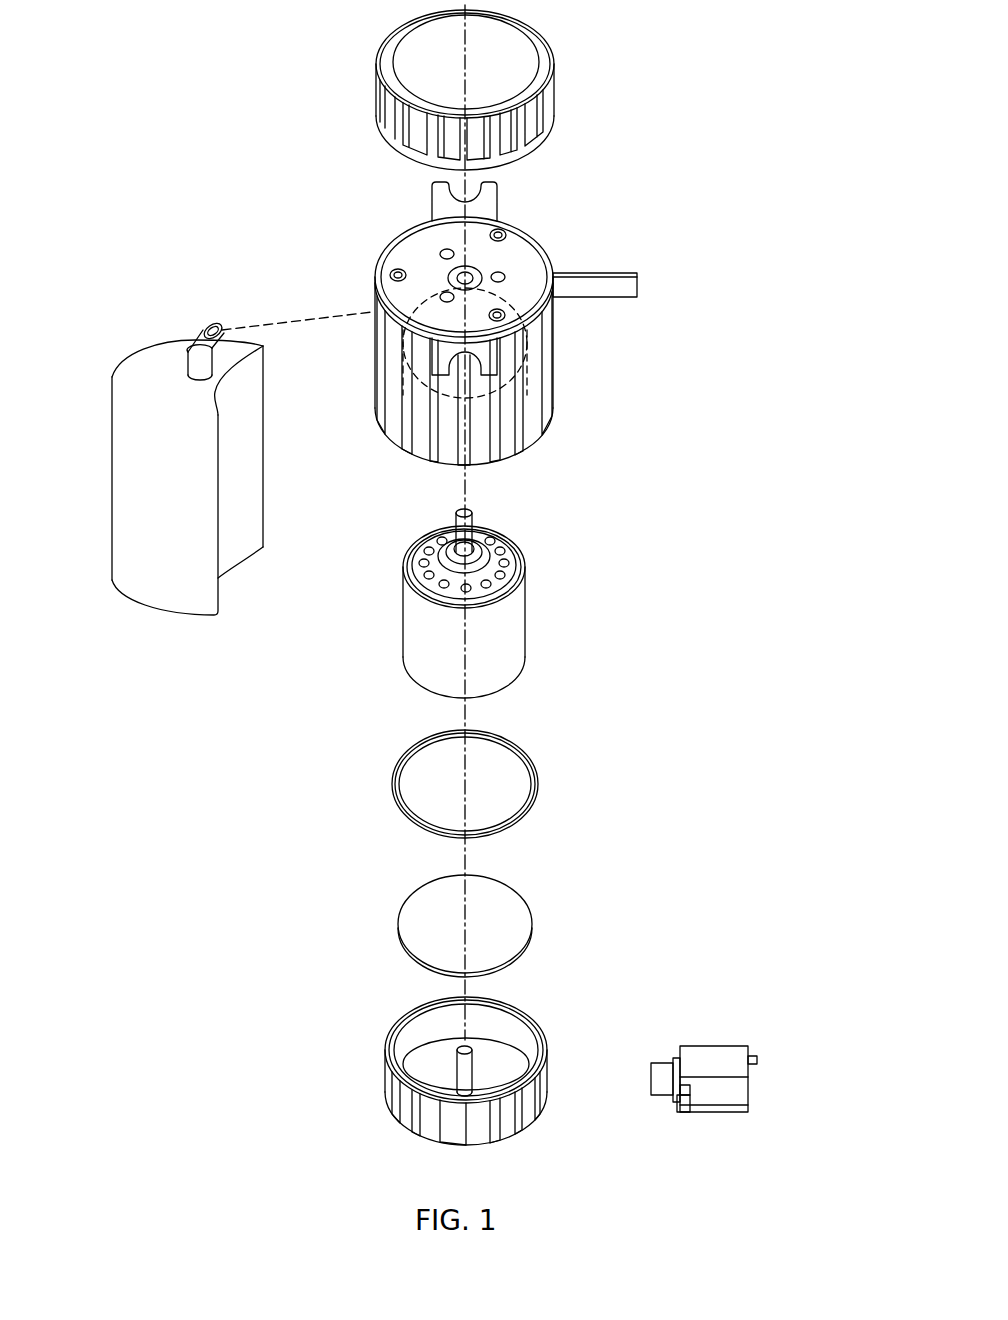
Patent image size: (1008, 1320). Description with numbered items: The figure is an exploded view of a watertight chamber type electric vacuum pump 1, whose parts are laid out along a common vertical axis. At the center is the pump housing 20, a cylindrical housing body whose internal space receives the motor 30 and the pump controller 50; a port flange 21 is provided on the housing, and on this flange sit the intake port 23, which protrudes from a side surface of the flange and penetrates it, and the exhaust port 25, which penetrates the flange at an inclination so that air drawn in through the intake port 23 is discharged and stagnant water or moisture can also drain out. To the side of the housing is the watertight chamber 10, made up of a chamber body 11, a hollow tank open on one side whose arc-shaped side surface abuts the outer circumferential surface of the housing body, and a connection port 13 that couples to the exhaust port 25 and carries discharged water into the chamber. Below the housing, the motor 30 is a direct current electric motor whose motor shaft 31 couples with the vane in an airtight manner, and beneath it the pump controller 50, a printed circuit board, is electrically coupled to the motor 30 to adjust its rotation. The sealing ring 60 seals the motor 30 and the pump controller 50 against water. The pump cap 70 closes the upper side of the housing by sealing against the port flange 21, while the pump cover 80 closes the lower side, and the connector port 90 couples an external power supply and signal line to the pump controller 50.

The electric vacuum pump 1 is at (730, 147).
The watertight chamber 10 is at (233, 411).
The chamber body 11 is at (140, 370).
The connection port 13 is at (198, 345).
The pump housing 20 is at (497, 313).
The port flange 21 is at (398, 240).
The intake port 23 is at (607, 273).
The exhaust port 25 is at (548, 322).
The motor 30 is at (510, 602).
The motor shaft 31 is at (472, 515).
The pump controller 50 is at (533, 915).
The sealing ring 60 is at (540, 778).
The pump cap 70 is at (517, 43).
The pump cover 80 is at (390, 1037).
The connector port 90 is at (712, 1046).